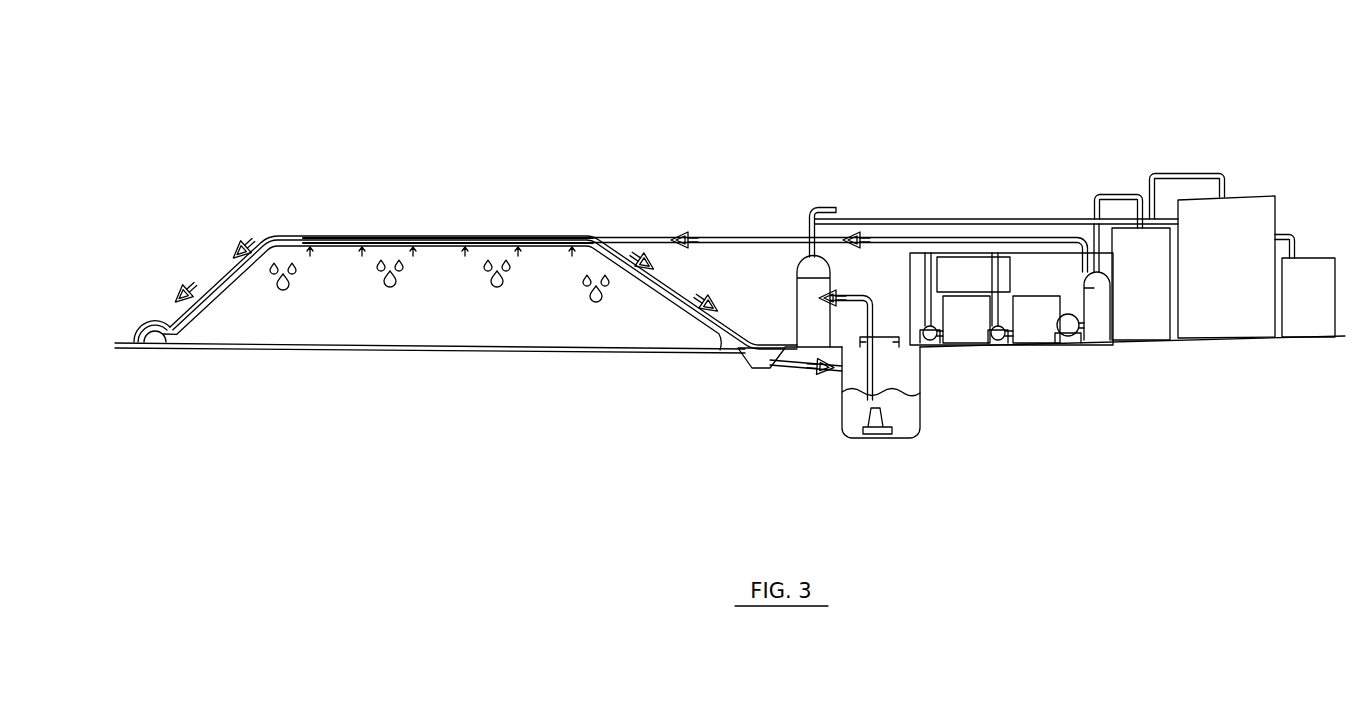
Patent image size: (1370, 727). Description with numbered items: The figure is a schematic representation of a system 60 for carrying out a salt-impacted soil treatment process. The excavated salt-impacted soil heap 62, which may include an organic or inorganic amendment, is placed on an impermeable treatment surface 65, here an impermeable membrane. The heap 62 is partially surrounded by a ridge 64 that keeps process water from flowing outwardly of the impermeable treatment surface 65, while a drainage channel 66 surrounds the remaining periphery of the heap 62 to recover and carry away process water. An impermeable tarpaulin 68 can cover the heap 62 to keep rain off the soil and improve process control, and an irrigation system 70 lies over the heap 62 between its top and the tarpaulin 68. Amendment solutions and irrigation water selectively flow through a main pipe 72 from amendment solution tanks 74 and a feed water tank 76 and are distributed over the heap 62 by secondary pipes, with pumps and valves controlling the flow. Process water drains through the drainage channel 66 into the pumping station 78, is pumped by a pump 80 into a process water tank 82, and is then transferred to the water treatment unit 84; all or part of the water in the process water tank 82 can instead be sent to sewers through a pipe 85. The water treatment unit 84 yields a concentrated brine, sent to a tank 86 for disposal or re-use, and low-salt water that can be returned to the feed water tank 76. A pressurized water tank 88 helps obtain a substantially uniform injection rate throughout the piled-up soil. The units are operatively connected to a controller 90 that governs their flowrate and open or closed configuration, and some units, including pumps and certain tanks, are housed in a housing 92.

The system 60 is at (766, 64).
The excavated salt-impacted soil heap 62 is at (467, 333).
The ridge 64 is at (155, 349).
The impermeable treatment surface 65 is at (282, 350).
The drainage channel 66 is at (763, 378).
The impermeable tarpaulin 68 is at (340, 237).
The irrigation system 70 is at (470, 237).
The main pipe 72 is at (709, 238).
The amendment solution tank 74 is at (1035, 330).
The feed water tank 76 is at (1137, 248).
The pumping station 78 is at (852, 443).
The pump 80 is at (886, 432).
The process water tank 82 is at (800, 258).
The water treatment unit 84 is at (1252, 197).
The pipe 85 is at (824, 206).
The tank 86 is at (1308, 325).
The pressurized water tank 88 is at (1098, 327).
The controller 90 is at (962, 268).
The housing 92 is at (1013, 247).